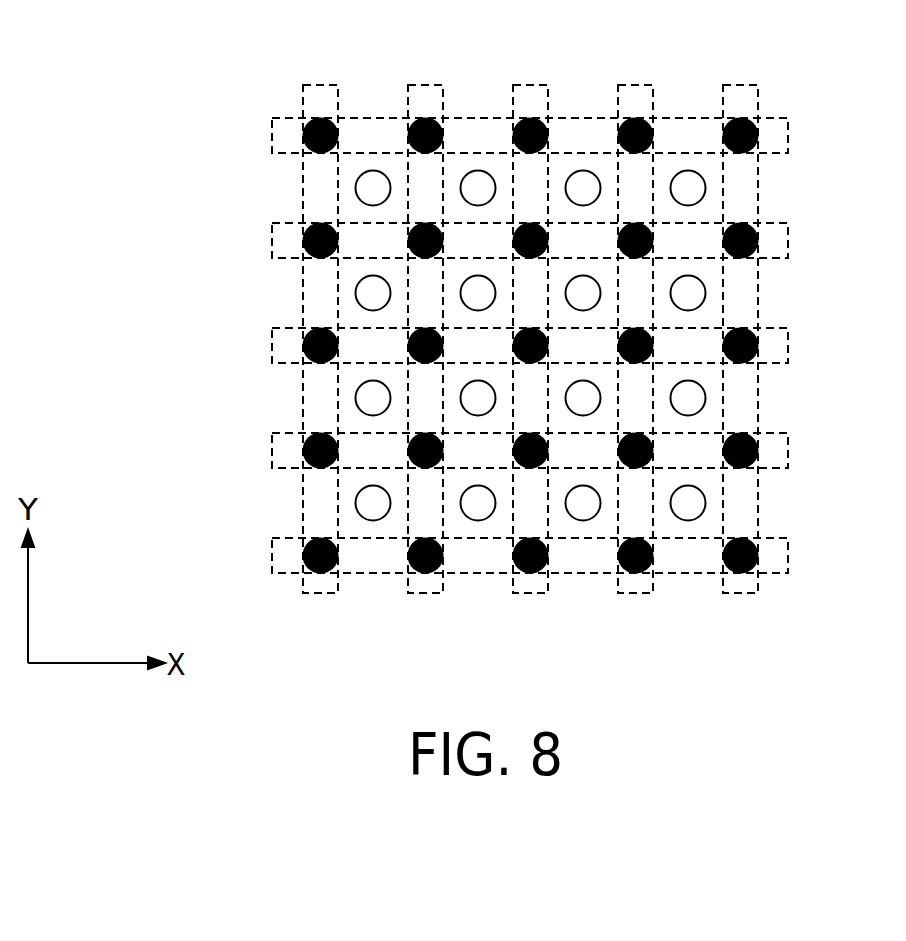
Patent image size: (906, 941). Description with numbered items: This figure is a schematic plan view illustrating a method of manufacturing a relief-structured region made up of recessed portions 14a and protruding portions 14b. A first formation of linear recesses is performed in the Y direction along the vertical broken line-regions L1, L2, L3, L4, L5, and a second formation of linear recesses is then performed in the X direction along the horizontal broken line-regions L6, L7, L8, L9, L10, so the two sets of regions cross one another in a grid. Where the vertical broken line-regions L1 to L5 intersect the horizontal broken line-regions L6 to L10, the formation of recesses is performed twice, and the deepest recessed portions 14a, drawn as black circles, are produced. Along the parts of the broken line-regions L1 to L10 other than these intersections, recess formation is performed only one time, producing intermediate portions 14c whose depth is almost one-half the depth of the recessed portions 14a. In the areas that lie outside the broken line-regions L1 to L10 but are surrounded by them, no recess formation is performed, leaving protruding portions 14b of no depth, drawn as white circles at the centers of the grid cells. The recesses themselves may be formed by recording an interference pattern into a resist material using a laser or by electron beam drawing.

The broken line-region L1 is at (320, 85).
The broken line-region L2 is at (426, 85).
The broken line-region L3 is at (530, 85).
The broken line-region L4 is at (636, 85).
The broken line-region L5 is at (740, 85).
The broken line-region L6 is at (272, 138).
The broken line-region L7 is at (272, 242).
The broken line-region L8 is at (272, 348).
The broken line-region L9 is at (272, 452).
The broken line-region L10 is at (272, 558).
The recessed portion 14a is at (530, 573).
The protruding portion 14b is at (582, 520).
The intermediate portion 14c is at (370, 560).